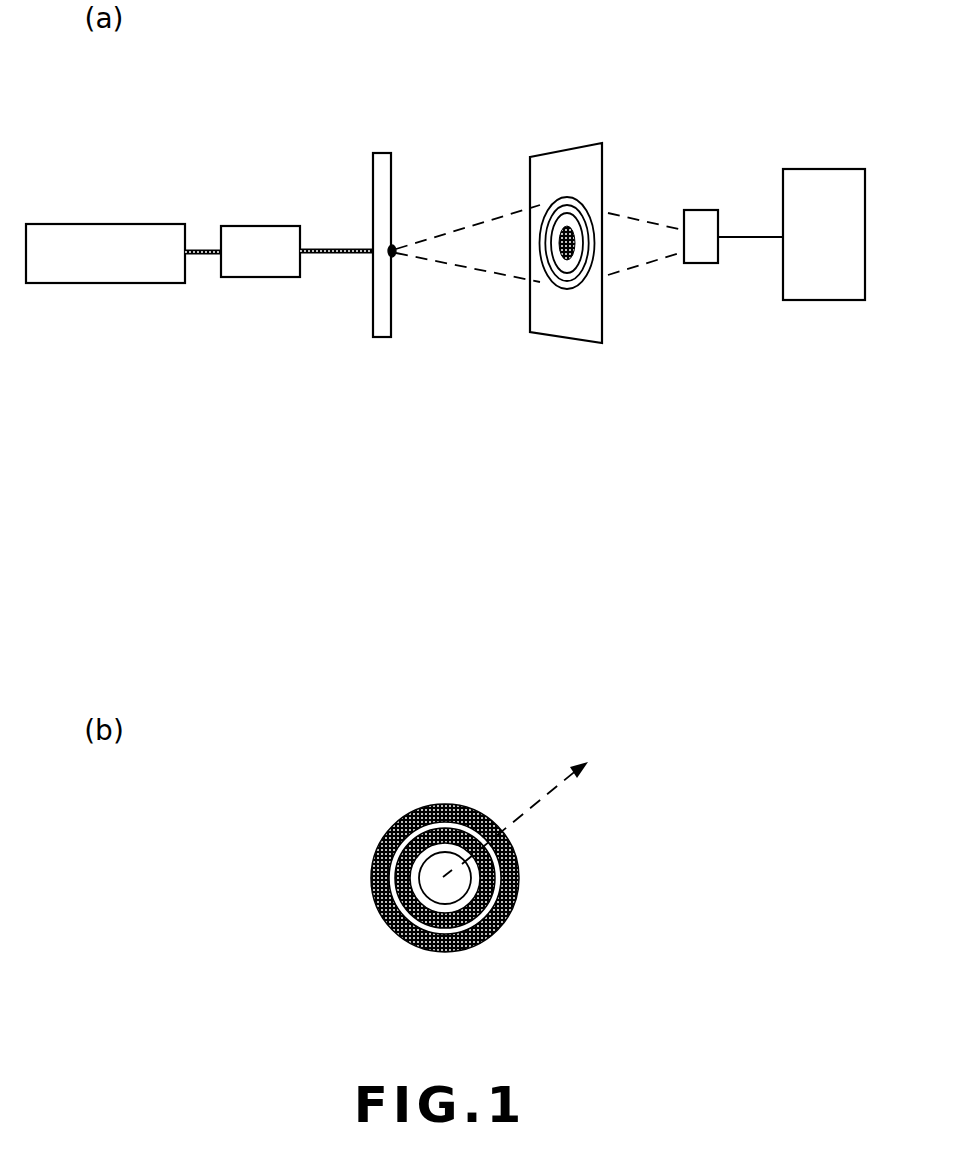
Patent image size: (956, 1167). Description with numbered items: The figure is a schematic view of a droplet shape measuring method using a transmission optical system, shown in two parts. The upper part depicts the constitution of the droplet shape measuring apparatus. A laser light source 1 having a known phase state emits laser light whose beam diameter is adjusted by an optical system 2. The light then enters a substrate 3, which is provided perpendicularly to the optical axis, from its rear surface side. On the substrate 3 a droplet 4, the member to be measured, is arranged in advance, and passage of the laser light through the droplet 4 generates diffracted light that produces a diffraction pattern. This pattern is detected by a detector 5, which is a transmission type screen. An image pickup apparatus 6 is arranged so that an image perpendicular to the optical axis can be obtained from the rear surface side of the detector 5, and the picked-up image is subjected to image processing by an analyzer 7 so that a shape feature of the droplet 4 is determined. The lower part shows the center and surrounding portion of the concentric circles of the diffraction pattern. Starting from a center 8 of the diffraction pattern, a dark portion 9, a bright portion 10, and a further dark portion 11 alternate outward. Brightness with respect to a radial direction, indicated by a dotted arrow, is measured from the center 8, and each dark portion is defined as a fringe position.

The laser light source 1 is at (70, 223).
The optical system 2 is at (250, 226).
The substrate 3 is at (373, 152).
The droplet 4 is at (394, 242).
The detector 5 is at (545, 155).
The image pickup apparatus 6 is at (695, 208).
The analyzer 7 is at (823, 168).
The center 8 is at (440, 858).
The dark portion 9 is at (473, 840).
The bright portion 10 is at (473, 870).
The dark portion 11 is at (493, 900).